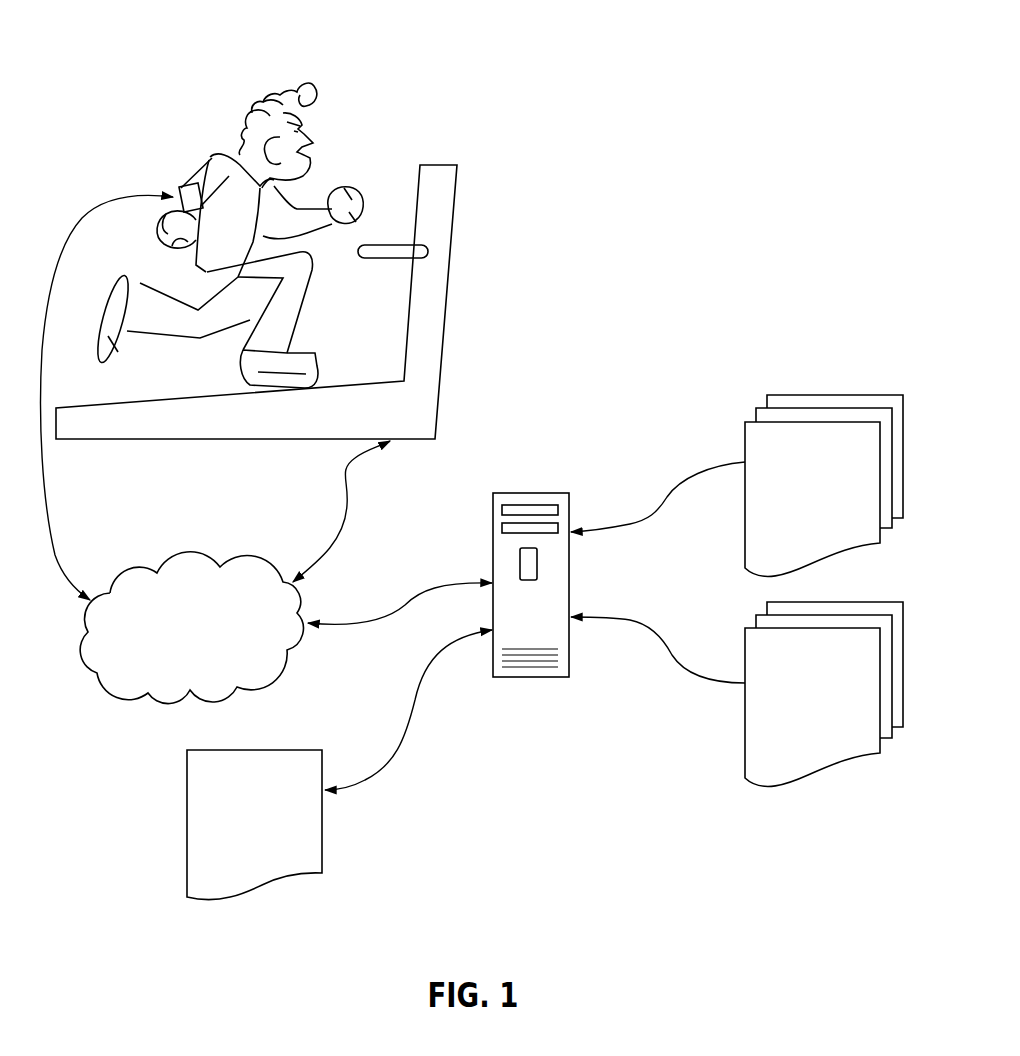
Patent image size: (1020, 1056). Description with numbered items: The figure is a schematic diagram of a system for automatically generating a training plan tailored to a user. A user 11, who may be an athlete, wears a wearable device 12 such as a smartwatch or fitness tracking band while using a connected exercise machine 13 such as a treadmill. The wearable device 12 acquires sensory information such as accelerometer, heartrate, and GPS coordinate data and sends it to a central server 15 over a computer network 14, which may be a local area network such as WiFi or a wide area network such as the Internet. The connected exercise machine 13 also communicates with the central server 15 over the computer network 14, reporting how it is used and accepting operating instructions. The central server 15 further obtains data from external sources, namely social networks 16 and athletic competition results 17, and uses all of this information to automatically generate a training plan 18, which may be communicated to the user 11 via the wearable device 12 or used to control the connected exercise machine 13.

The user 11 is at (283, 95).
The wearable device 12 is at (177, 188).
The connected exercise machine 13 is at (400, 427).
The computer network 14 is at (179, 662).
The central server 15 is at (523, 493).
The social networks 16 is at (799, 528).
The athletic competition results 17 is at (799, 738).
The training plan 18 is at (241, 837).